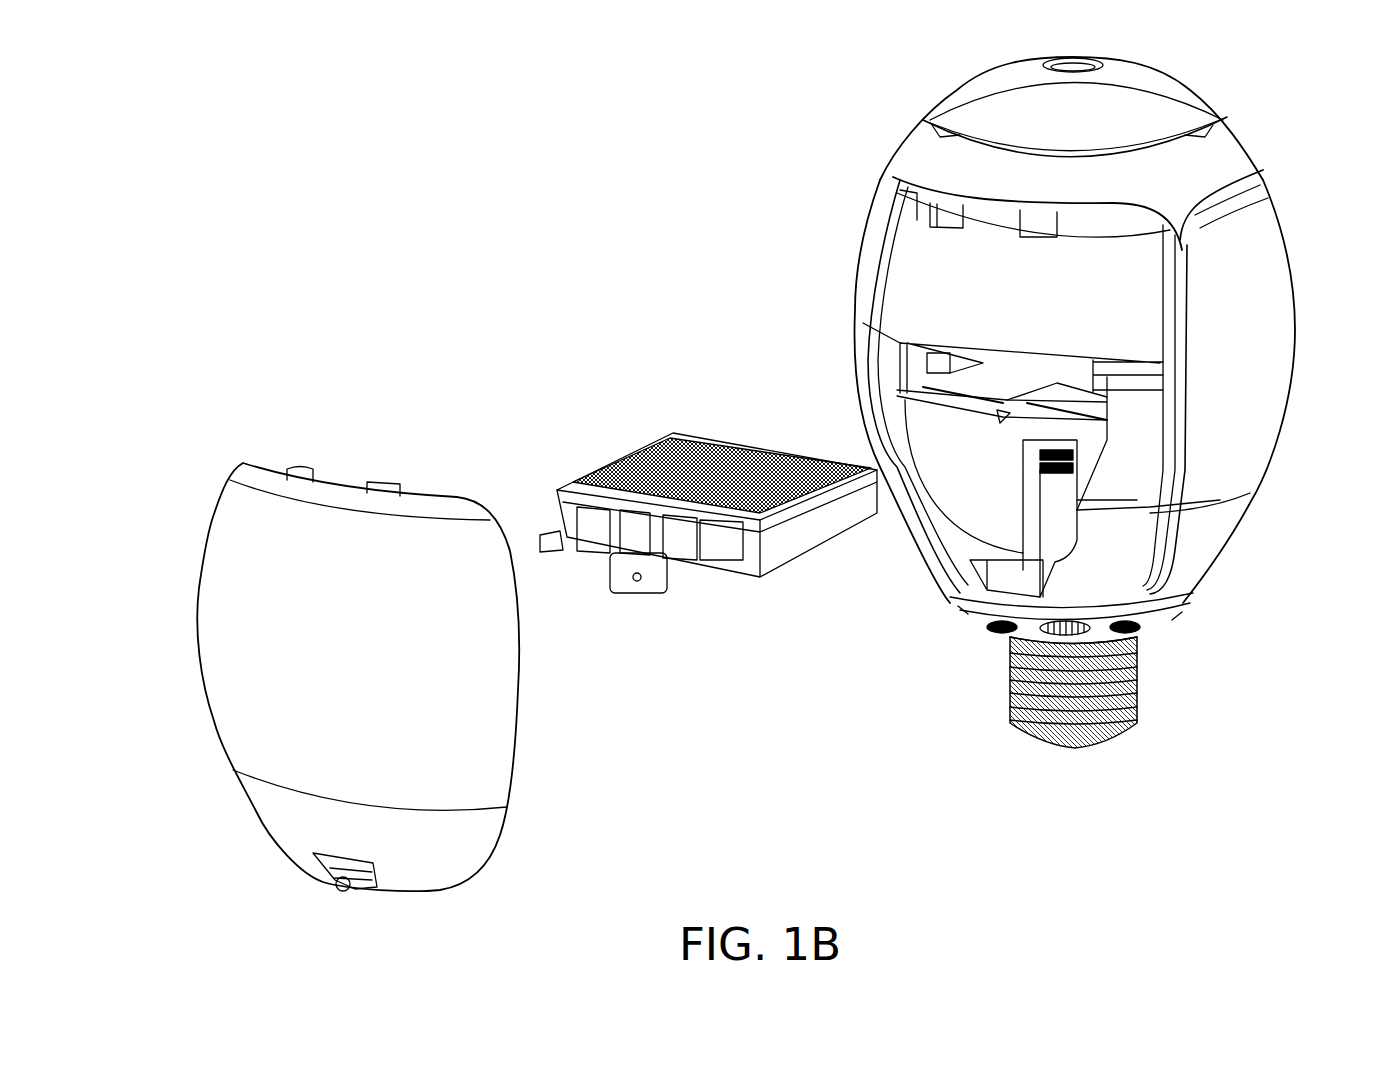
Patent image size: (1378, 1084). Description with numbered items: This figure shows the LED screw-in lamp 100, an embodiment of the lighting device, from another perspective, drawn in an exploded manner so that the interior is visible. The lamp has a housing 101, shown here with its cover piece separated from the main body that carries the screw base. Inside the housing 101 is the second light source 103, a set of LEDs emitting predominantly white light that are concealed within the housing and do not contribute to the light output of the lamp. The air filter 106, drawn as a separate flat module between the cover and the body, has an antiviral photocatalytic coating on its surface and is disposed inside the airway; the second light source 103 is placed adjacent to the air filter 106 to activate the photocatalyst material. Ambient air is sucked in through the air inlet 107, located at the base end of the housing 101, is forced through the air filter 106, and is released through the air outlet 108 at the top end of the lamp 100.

The LED screw-in lamp 100 is at (751, 465).
The housing 101 is at (218, 518).
The second light source 103 is at (1057, 385).
The air filter 106 is at (637, 463).
The air inlet 107 is at (1005, 630).
The air outlet 108 is at (956, 133).